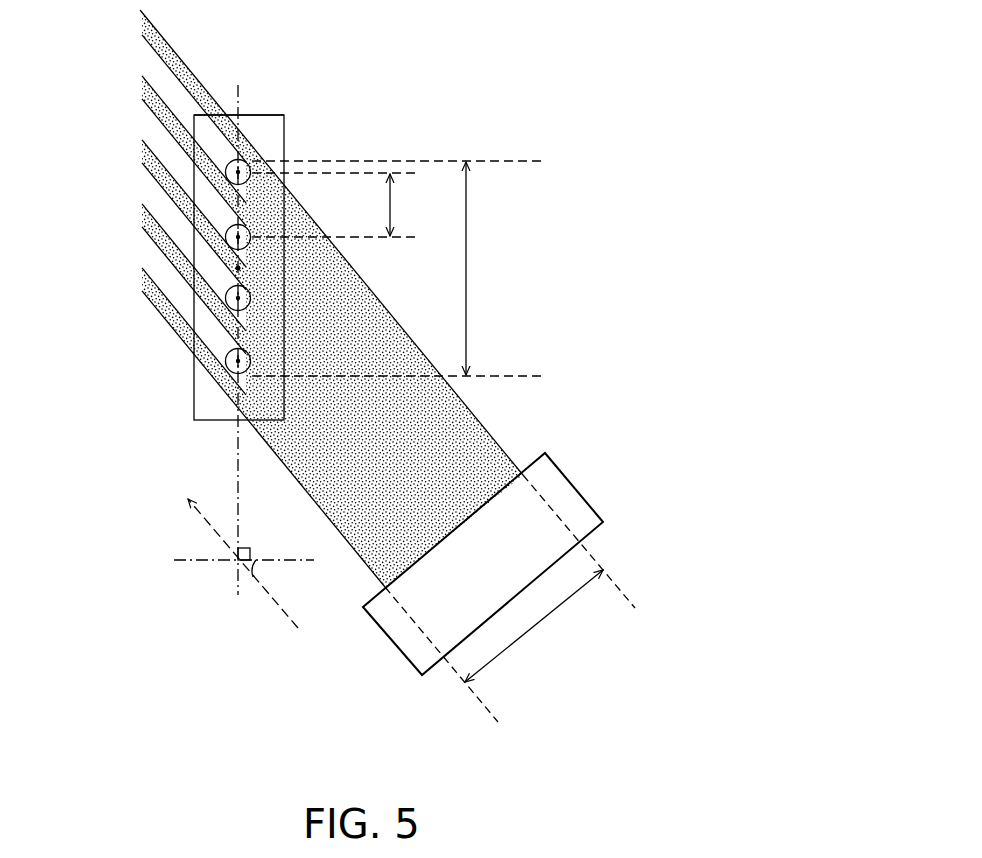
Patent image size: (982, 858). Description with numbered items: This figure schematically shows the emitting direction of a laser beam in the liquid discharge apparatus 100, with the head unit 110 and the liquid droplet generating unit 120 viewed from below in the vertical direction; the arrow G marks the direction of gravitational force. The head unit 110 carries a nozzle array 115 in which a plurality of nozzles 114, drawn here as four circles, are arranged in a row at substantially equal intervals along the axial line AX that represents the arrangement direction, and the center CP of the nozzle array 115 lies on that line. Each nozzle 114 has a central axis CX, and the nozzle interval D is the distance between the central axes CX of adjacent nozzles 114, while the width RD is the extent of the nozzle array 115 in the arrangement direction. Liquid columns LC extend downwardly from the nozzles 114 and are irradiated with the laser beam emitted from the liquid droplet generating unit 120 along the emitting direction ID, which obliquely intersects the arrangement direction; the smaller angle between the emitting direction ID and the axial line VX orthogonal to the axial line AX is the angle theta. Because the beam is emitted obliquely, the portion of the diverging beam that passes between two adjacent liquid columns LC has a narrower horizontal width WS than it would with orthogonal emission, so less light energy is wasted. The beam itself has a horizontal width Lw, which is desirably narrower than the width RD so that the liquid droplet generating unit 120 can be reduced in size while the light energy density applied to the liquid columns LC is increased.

The liquid discharge apparatus 100 is at (625, 75).
The head unit 110 is at (259, 128).
The nozzles 114 is at (248, 160).
The nozzle array 115 is at (262, 127).
The liquid droplet generating unit 120 is at (563, 470).
The horizontal width of laser beam passing between adjacent liquid columns WS is at (140, 74).
The central axes of nozzles CX is at (246, 169).
The liquid columns LC is at (247, 181).
The center of nozzle array CP is at (236, 266).
The nozzle interval D is at (399, 205).
The width of nozzle array RD is at (482, 268).
The axial line representing arrangement direction AX is at (236, 354).
The axial line orthogonal to arrangement direction VX is at (226, 560).
The emitting direction of laser beam ID is at (253, 577).
The angle between emitting direction and orthogonal axial line theta is at (264, 573).
The direction of gravitational force G is at (85, 412).
The horizontal width of laser beam Lw is at (534, 626).